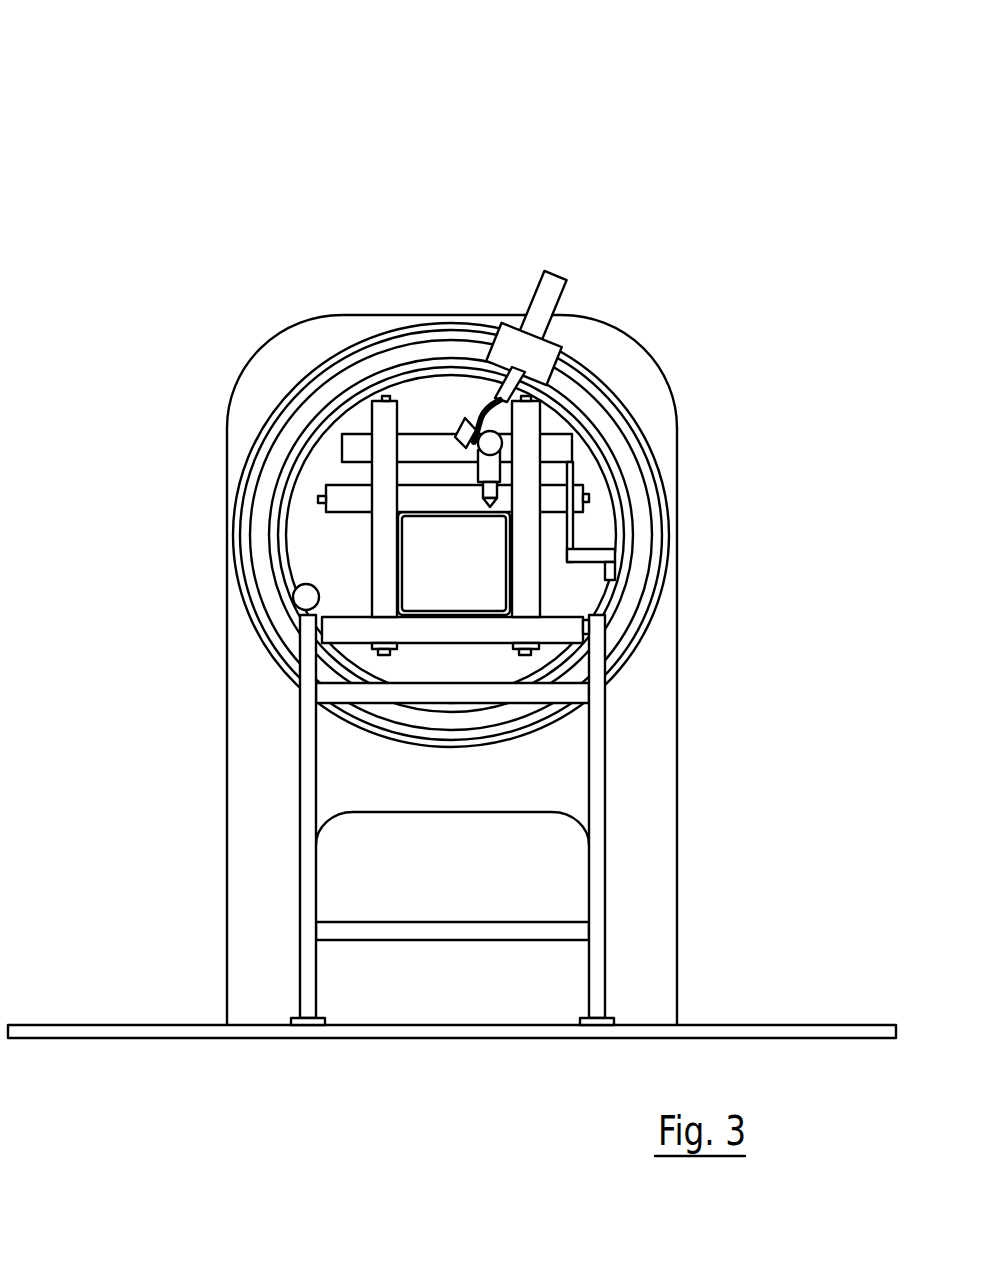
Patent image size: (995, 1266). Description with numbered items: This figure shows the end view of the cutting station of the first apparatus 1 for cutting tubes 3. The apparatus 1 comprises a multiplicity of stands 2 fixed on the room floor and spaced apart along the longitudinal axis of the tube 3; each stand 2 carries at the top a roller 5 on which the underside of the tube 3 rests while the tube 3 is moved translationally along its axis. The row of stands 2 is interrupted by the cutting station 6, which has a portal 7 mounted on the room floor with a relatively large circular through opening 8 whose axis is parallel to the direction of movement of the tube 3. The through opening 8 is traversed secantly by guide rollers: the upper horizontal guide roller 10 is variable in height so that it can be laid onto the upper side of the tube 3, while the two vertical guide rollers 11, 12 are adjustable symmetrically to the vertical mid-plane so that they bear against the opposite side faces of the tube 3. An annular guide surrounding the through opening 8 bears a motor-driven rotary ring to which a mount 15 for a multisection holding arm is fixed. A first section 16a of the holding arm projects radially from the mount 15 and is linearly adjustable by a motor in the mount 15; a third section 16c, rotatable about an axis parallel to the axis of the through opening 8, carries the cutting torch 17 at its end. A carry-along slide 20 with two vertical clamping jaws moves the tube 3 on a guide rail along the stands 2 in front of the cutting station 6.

The apparatus for cutting tubes 1 is at (203, 287).
The stand 2 is at (307, 952).
The tube 3 is at (420, 603).
The roller 5 is at (473, 627).
The cutting station 6 is at (712, 346).
The portal 7 is at (632, 912).
The through opening 8 is at (293, 594).
The upper horizontal guide roller 10 is at (362, 496).
The vertical guide roller 11 is at (383, 465).
The vertical guide roller 12 is at (527, 602).
The mount 15 is at (541, 300).
The first section of the holding arm 16a is at (560, 378).
The third section of the holding arm 16c is at (503, 478).
The cutting torch 17 is at (503, 483).
The carry-along slide 20 is at (437, 446).